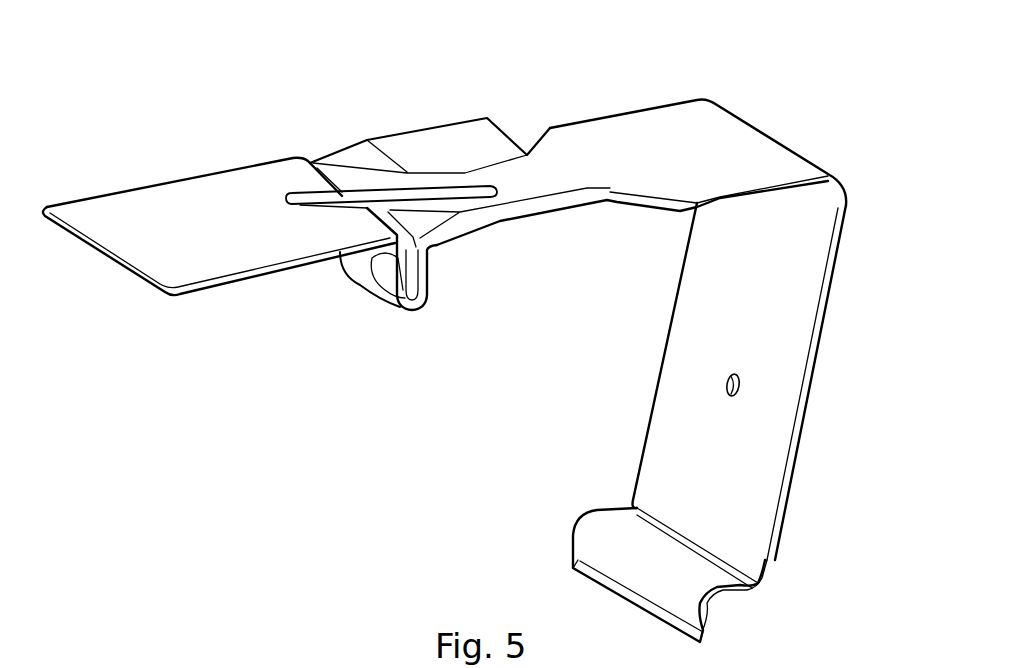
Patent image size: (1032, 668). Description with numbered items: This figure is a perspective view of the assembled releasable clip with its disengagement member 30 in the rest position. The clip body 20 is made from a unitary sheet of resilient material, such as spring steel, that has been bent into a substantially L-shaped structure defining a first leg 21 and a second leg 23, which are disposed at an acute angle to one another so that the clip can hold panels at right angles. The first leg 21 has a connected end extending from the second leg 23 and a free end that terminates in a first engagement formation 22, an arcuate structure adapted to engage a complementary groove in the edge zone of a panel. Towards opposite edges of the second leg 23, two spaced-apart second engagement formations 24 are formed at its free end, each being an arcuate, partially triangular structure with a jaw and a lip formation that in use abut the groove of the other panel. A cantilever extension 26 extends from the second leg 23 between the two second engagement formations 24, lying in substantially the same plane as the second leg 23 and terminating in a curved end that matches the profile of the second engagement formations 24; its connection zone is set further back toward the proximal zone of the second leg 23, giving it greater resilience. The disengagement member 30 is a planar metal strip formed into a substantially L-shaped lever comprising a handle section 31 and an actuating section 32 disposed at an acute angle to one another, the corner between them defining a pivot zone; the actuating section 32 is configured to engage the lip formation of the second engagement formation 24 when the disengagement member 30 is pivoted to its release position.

The clip body 20 is at (819, 111).
The first leg 21 is at (787, 327).
The first engagement formation 22 is at (713, 600).
The second leg 23 is at (627, 152).
The second engagement formation 24 is at (414, 330).
The cantilever extension 26 is at (440, 190).
The disengagement member 30 is at (148, 149).
The handle section 31 is at (197, 265).
The actuating section 32 is at (413, 268).